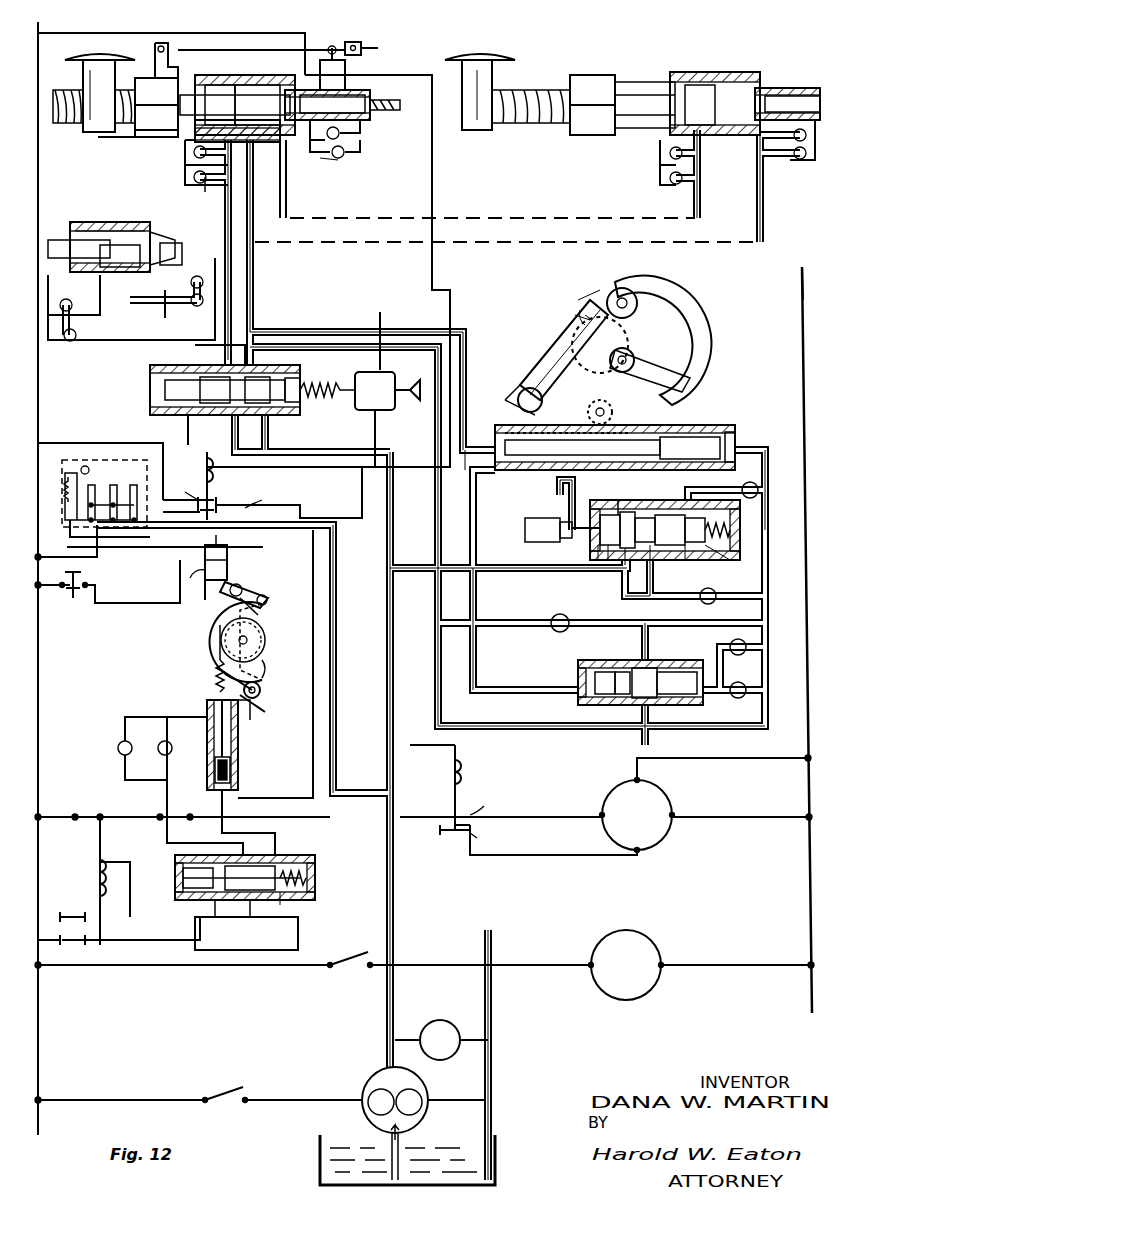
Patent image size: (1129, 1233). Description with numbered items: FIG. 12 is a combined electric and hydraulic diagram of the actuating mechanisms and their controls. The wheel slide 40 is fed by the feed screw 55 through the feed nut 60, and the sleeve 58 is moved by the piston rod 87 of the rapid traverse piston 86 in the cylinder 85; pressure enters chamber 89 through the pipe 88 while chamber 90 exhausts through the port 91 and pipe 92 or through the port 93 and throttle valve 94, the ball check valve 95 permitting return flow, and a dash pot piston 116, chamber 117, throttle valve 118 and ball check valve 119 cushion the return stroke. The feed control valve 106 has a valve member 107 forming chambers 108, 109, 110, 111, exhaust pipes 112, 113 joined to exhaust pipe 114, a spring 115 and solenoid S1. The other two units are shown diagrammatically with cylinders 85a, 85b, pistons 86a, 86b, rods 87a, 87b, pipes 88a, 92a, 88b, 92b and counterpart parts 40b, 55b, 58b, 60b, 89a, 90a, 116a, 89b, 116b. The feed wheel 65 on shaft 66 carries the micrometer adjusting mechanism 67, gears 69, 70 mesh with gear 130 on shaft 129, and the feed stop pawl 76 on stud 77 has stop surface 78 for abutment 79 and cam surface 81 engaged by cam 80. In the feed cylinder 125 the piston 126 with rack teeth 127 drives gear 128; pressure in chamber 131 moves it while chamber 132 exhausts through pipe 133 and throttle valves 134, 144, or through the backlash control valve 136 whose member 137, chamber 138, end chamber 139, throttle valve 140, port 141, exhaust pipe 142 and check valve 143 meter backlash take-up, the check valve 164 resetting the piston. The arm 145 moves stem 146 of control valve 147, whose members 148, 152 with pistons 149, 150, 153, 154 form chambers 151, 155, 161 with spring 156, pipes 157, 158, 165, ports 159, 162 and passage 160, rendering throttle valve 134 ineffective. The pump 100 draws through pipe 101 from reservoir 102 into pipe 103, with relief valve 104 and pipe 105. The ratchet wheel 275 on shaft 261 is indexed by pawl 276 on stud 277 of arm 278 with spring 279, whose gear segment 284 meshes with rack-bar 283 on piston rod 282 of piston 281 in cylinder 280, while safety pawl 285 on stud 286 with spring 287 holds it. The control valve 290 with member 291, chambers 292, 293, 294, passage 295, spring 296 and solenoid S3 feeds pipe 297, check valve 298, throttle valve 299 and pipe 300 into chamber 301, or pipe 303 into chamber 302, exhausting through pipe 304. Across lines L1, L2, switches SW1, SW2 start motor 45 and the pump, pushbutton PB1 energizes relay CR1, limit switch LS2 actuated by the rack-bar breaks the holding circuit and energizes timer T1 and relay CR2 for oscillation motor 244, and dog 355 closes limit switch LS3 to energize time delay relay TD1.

The wheel slide 40 is at (100, 52).
The feed screw 55 is at (68, 125).
The slidably mounted sleeve 58 is at (148, 72).
The feed nut 60 is at (98, 95).
The cylinder 85 is at (252, 85).
The piston 86 is at (262, 135).
The piston rod 87 is at (215, 90).
The pipe 88 is at (475, 645).
The cylinder chamber 89 is at (292, 85).
The cylinder chamber 90 is at (235, 135).
The port 91 is at (238, 165).
The pipe 92 is at (690, 728).
The port 93 is at (185, 140).
The throttle valve 94 is at (185, 165).
The ball check valve 95 is at (205, 182).
The dash pot piston 116 is at (305, 135).
The dash pot chamber 117 is at (345, 125).
The throttle valve 118 is at (350, 152).
The ball check valve 119 is at (338, 160).
The adjustable dog 355 is at (362, 46).
The limit switch LS3 is at (340, 75).
The power line L1 is at (38, 33).
The power line L2 is at (490, 745).
The cylinder 85a is at (115, 230).
The piston 86a is at (125, 275).
The piston rod 87a is at (62, 240).
The pipe 88a is at (165, 318).
The cylinder end 89a is at (150, 245).
The cylinder portion 90a is at (95, 222).
The pipe 92a is at (90, 330).
The rod 116a is at (168, 255).
The feed control valve 106 is at (150, 372).
The valve member 107 is at (300, 410).
The valve chamber 108 is at (200, 372).
The valve chamber 109 is at (235, 415).
The valve chamber 110 is at (258, 372).
The valve chamber 111 is at (265, 415).
The exhaust pipe 112 is at (185, 425).
The exhaust pipe 113 is at (293, 492).
The compression spring 115 is at (312, 378).
The solenoid S1 is at (387, 391).
The screw 40b is at (478, 45).
The threaded portion 55b is at (528, 92).
The block 58b is at (588, 78).
The screw shank 60b is at (480, 130).
The cylinder 85b is at (735, 80).
The piston 86b is at (685, 85).
The piston rod 87b is at (635, 90).
The pipe 88b is at (697, 190).
The cylinder end 89b is at (768, 85).
The pipe 92b is at (765, 200).
The rod 116b is at (790, 95).
The feed wheel 65 is at (662, 330).
The shaft 66 is at (650, 368).
The micrometer adjusting mechanism 67 is at (630, 295).
The gear 69 is at (632, 358).
The gear 70 is at (590, 352).
The feed stop pawl 76 is at (560, 345).
The stud 77 is at (516, 385).
The stop surface 78 is at (575, 315).
The stop abutment 79 is at (585, 315).
The cam surface 80 is at (580, 310).
The cam surface 81 is at (575, 315).
The cylinder 125 is at (725, 425).
The piston 126 is at (665, 447).
The rack teeth 127 is at (580, 425).
The gear 128 is at (582, 444).
The rotatable shaft 129 is at (670, 405).
The gear 130 is at (614, 403).
The cylinder chamber 131 is at (486, 471).
The cylinder chamber 132 is at (735, 432).
The pipe 133 is at (645, 620).
The throttle valve 134 is at (758, 488).
The backlash control valve 136 is at (575, 665).
The valve member 137 is at (600, 670).
The valve chamber 138 is at (620, 670).
The end chamber 139 is at (672, 668).
The throttle valve 140 is at (738, 698).
The port 141 is at (642, 668).
The exhaust pipe 142 is at (640, 740).
The ball check valve 143 is at (748, 644).
The throttle valve 144 is at (715, 602).
The downwardly extending arm 145 is at (560, 505).
The stem 146 is at (528, 545).
The control valve 147 is at (588, 548).
The valve member 148 is at (595, 522).
The valve piston 149 is at (605, 518).
The valve piston 150 is at (615, 515).
The valve chamber 151 is at (598, 552).
The valve member 152 is at (640, 515).
The valve piston 153 is at (655, 518).
The valve piston 154 is at (715, 552).
The valve chamber 155 is at (685, 548).
The compression spring 156 is at (730, 525).
The pipe 157 is at (695, 500).
The exhaust pipe 158 is at (612, 598).
The port 159 is at (608, 552).
The passage 160 is at (625, 565).
The valve chamber 161 is at (648, 548).
The port 162 is at (705, 596).
The ball check valve 164 is at (555, 616).
The pipe 165 is at (618, 510).
The pipe 103 is at (386, 1002).
The electric timer T1 is at (93, 445).
The time delay relay TD1 is at (225, 486).
The limit switch LS2 is at (213, 562).
The cycle start switch PB1 is at (92, 581).
The shaft 261 is at (250, 640).
The ratchet wheel 275 is at (266, 668).
The index pawl 276 is at (268, 608).
The stud 277 is at (235, 588).
The oscillatable arm 278 is at (268, 625).
The tension spring 279 is at (268, 596).
The cylinder 280 is at (237, 774).
The piston 281 is at (240, 755).
The piston rod 282 is at (212, 680).
The rack-bar 283 is at (222, 672).
The gear segment 284 is at (218, 640).
The safety pawl 285 is at (248, 712).
The stud 286 is at (260, 690).
The tension spring 287 is at (262, 700).
The control valve 290 is at (312, 858).
The valve member 291 is at (182, 868).
The valve chamber 292 is at (227, 908).
The valve chamber 293 is at (250, 920).
The valve chamber 294 is at (280, 898).
The central passage 295 is at (278, 858).
The compression spring 296 is at (315, 878).
The pipe 297 is at (167, 798).
The ball check valve 298 is at (169, 752).
The throttle valve 299 is at (118, 748).
The pipe 300 is at (200, 718).
The cylinder chamber 301 is at (167, 740).
The cylinder chamber 302 is at (240, 798).
The pipe 303 is at (225, 810).
The pipe 304 is at (246, 936).
The solenoid S3 is at (182, 880).
The relay switch CR1 is at (100, 862).
The relay switch CR2 is at (466, 770).
The switch SW1 is at (346, 953).
The switch SW2 is at (225, 1087).
The work oscillation motor 244 is at (670, 835).
The grinding wheel driving motor 45 is at (640, 990).
The fluid pump 100 is at (370, 1070).
The pipe 101 is at (345, 1135).
The reservoir 102 is at (322, 1155).
The relief valve 104 is at (442, 1020).
The pipe 105 is at (494, 1045).
The exhaust pipe 114 is at (488, 948).